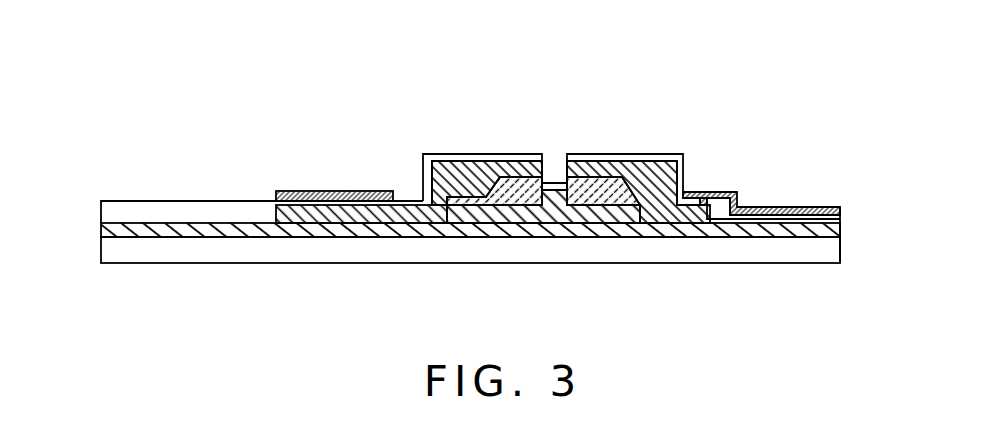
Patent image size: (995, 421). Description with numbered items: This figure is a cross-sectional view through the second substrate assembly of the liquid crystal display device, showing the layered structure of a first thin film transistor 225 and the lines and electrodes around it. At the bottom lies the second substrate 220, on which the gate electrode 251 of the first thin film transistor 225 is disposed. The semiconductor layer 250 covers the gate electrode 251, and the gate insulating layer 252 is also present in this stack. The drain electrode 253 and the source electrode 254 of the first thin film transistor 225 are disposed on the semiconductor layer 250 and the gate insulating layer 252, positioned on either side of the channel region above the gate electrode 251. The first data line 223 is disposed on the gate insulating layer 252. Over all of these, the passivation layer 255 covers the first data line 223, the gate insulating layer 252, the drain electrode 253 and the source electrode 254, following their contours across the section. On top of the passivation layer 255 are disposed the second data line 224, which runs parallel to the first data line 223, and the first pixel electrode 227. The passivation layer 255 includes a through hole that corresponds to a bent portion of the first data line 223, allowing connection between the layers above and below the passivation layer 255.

The second substrate 220 is at (717, 247).
The first data line 223 is at (291, 212).
The second data line 224 is at (367, 192).
The first thin film transistor 225 is at (546, 151).
The first pixel electrode 227 is at (788, 207).
The semiconductor layer 250 is at (492, 172).
The gate electrode 251 is at (560, 222).
The gate insulating layer 252 is at (792, 228).
The drain electrode 253 is at (640, 207).
The source electrode 254 is at (494, 210).
The passivation layer 255 is at (637, 190).